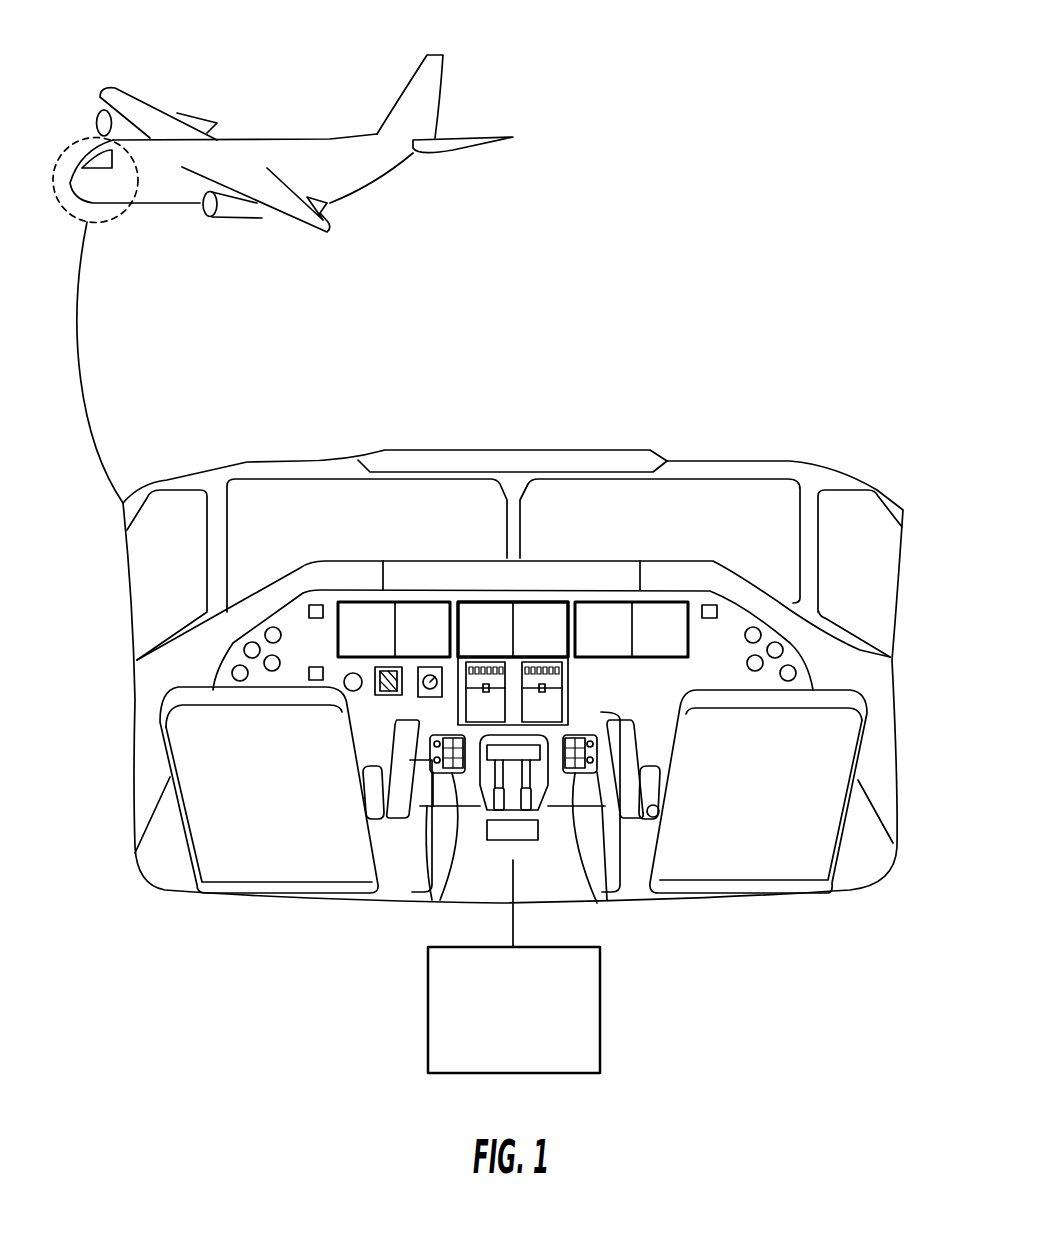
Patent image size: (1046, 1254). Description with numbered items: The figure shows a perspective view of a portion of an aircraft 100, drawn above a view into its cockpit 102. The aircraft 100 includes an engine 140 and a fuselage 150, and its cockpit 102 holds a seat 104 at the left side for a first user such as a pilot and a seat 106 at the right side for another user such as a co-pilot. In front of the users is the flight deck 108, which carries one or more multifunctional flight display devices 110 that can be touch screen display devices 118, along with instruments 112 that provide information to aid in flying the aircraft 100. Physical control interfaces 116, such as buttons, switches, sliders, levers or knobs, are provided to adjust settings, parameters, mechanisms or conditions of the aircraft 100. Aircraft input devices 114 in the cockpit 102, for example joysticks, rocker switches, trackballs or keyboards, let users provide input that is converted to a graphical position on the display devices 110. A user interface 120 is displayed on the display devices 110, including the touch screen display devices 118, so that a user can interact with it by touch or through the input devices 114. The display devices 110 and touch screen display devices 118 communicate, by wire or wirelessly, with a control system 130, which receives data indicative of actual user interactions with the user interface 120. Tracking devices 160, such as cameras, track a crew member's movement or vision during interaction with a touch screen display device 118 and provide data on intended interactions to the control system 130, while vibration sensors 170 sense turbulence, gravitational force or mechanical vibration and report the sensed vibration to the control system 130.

The aircraft 100 is at (283, 252).
The cockpit 102 is at (333, 463).
The seat 104 is at (232, 865).
The seat 106 is at (772, 862).
The flight deck 108 is at (218, 623).
The multifunctional flight display device 110 is at (432, 602).
The instrument 112 is at (232, 673).
The aircraft input device 114 is at (453, 770).
The physical control interface 116 is at (422, 692).
The touch screen display device 118 is at (355, 641).
The user interface 120 is at (455, 652).
The control system 130 is at (533, 1021).
The engine 140 is at (232, 220).
The fuselage 150 is at (157, 180).
The tracking device 160 is at (310, 608).
The vibration sensor 170 is at (172, 190).